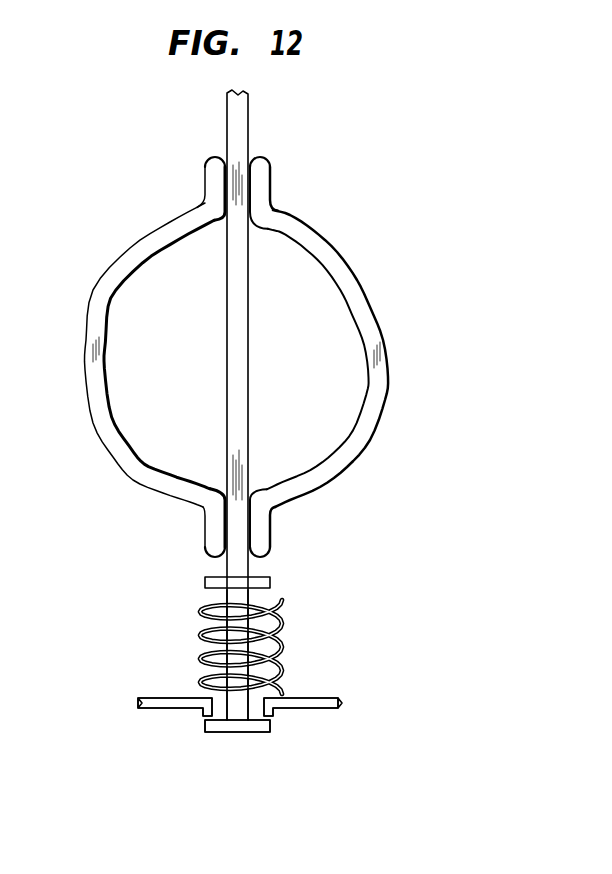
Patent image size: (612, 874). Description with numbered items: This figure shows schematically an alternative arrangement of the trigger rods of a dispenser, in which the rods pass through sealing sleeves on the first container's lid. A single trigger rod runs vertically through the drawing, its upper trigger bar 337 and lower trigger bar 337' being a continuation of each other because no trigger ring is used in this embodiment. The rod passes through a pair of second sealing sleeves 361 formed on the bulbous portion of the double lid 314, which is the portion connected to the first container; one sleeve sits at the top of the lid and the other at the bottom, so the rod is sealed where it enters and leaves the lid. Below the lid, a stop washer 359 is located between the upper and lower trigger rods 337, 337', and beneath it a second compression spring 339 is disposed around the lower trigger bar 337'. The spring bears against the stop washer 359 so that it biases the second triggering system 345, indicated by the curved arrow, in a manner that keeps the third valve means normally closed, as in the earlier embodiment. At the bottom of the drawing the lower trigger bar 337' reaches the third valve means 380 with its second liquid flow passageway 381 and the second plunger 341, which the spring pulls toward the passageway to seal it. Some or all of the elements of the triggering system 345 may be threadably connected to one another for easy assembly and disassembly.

The upper trigger bar 337 is at (277, 405).
The lower trigger bar 337' is at (287, 655).
The double lid 314 is at (378, 318).
The second sealing sleeves 361 is at (259, 176).
The second triggering system 345 is at (268, 336).
The stop washer 359 is at (230, 583).
The second compression spring 339 is at (283, 668).
The base 380 is at (192, 725).
The arm 381 is at (222, 704).
The bottom plate 341 is at (265, 727).